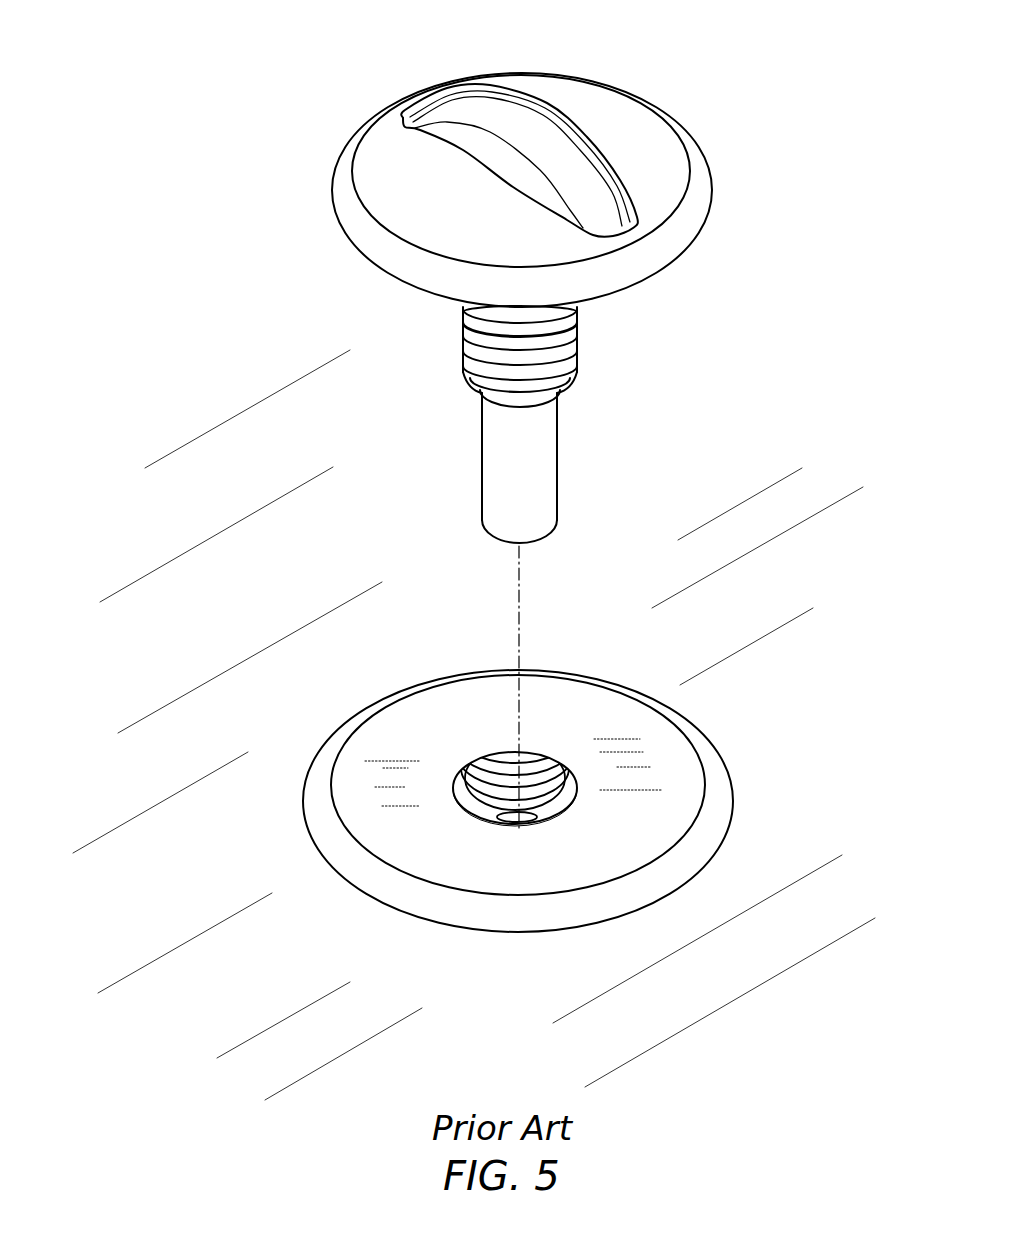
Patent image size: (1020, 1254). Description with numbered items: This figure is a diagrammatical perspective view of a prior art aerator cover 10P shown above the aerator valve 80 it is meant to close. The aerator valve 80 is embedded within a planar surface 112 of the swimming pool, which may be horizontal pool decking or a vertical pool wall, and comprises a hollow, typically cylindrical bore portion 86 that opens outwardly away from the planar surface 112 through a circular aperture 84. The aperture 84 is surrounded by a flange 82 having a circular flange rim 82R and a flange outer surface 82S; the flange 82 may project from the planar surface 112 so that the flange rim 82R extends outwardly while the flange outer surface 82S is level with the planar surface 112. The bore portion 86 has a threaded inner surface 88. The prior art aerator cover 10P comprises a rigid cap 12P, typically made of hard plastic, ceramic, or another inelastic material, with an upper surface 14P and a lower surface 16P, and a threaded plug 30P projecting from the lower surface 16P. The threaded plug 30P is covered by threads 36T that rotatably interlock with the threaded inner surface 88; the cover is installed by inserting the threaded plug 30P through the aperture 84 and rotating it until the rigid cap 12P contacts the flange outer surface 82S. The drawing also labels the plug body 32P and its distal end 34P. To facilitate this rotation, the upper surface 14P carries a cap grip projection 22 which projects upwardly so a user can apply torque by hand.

The prior art aerator cover 10P is at (710, 91).
The rigid cap 12P is at (622, 90).
The upper surface 14P is at (656, 161).
The lower surface 16P is at (704, 236).
The cap grip projection 22 is at (497, 116).
The threaded plug 30P is at (580, 471).
The external threads 32P is at (504, 356).
The distal tip of shank 34P is at (544, 537).
The threads 36T is at (465, 348).
The aerator valve 80 is at (758, 796).
The flange 82 is at (554, 801).
The flange outer surface 82S is at (673, 760).
The flange rim 82R is at (734, 822).
The aperture 84 is at (440, 725).
The bore portion 86 is at (478, 795).
The threaded inner surface 88 is at (515, 760).
The planar surface 112 is at (856, 715).